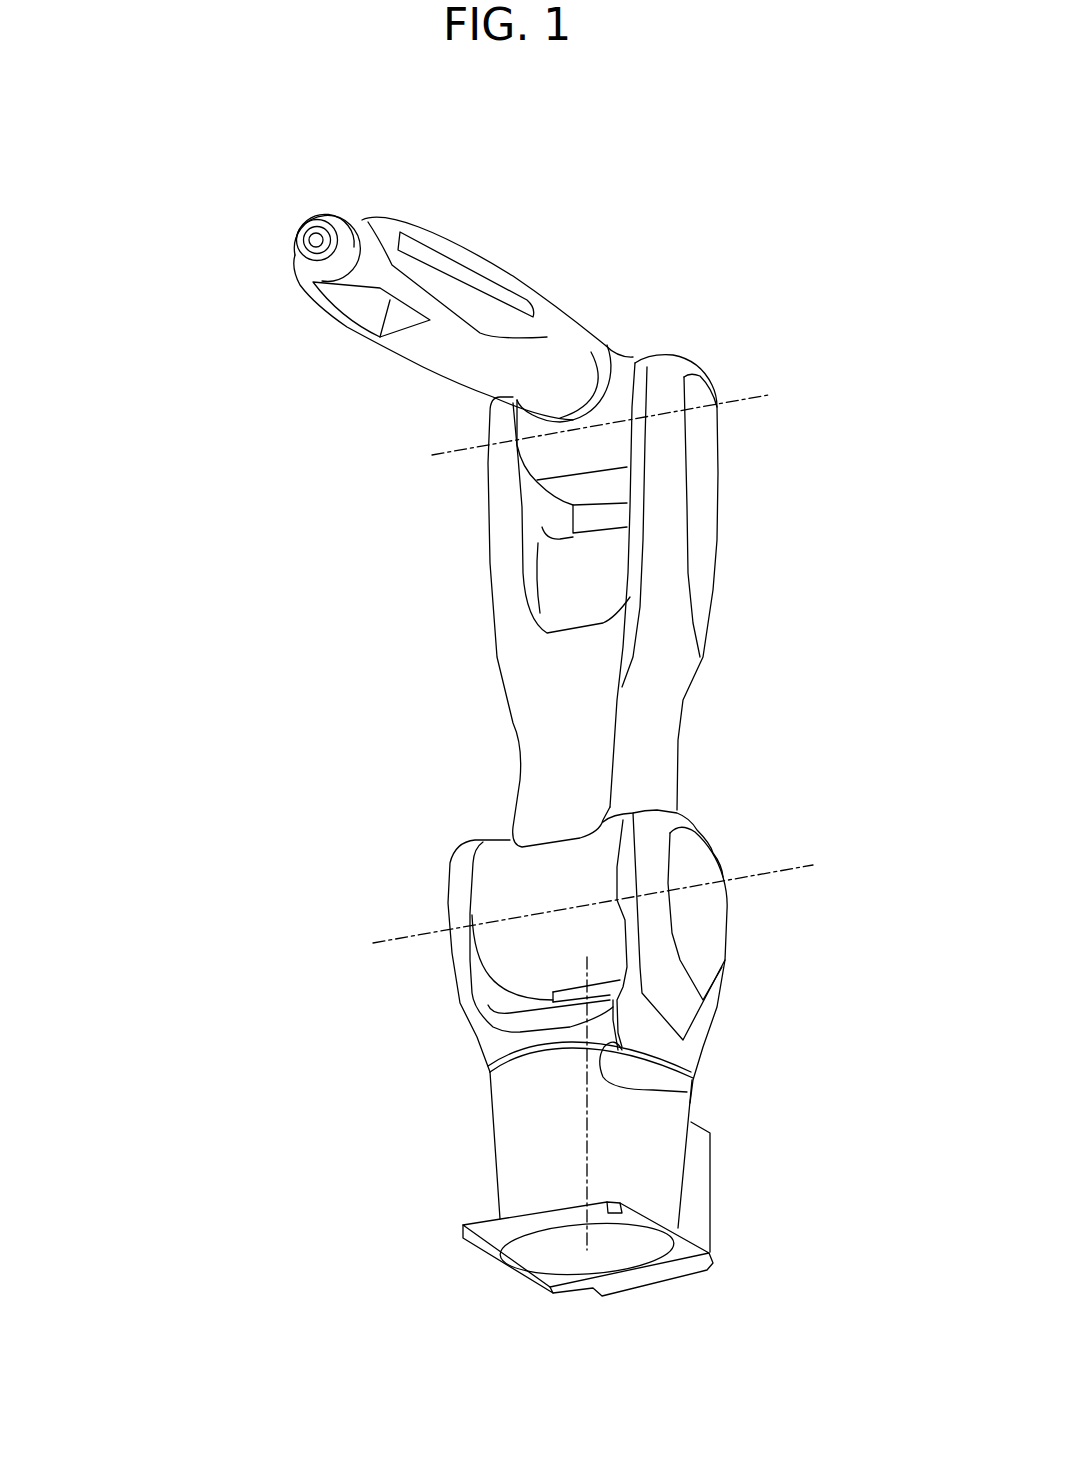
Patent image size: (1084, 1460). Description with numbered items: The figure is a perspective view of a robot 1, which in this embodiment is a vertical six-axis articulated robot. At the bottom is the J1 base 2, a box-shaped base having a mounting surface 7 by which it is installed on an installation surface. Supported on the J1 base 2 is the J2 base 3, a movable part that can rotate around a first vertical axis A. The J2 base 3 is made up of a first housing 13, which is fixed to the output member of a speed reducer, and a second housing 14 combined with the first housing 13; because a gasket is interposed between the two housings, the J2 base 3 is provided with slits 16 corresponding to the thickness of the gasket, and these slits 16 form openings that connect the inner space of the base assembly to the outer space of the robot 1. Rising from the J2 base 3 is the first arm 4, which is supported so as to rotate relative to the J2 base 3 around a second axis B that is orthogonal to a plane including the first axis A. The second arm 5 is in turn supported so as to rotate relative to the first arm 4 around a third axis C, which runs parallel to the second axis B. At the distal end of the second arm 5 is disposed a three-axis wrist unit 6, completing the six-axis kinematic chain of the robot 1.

The robot 1 is at (214, 193).
The J1 base 2 is at (479, 1127).
The J2 base 3 is at (745, 914).
The first arm 4 is at (700, 665).
The second arm 5 is at (632, 345).
The three-axis wrist unit 6 is at (455, 236).
The mounting surface 7 is at (563, 1285).
The first housing 13 is at (462, 957).
The second housing 14 is at (710, 932).
The slit 16 is at (687, 1092).
The first axis A is at (585, 1180).
The second axis B is at (762, 868).
The third axis C is at (770, 395).